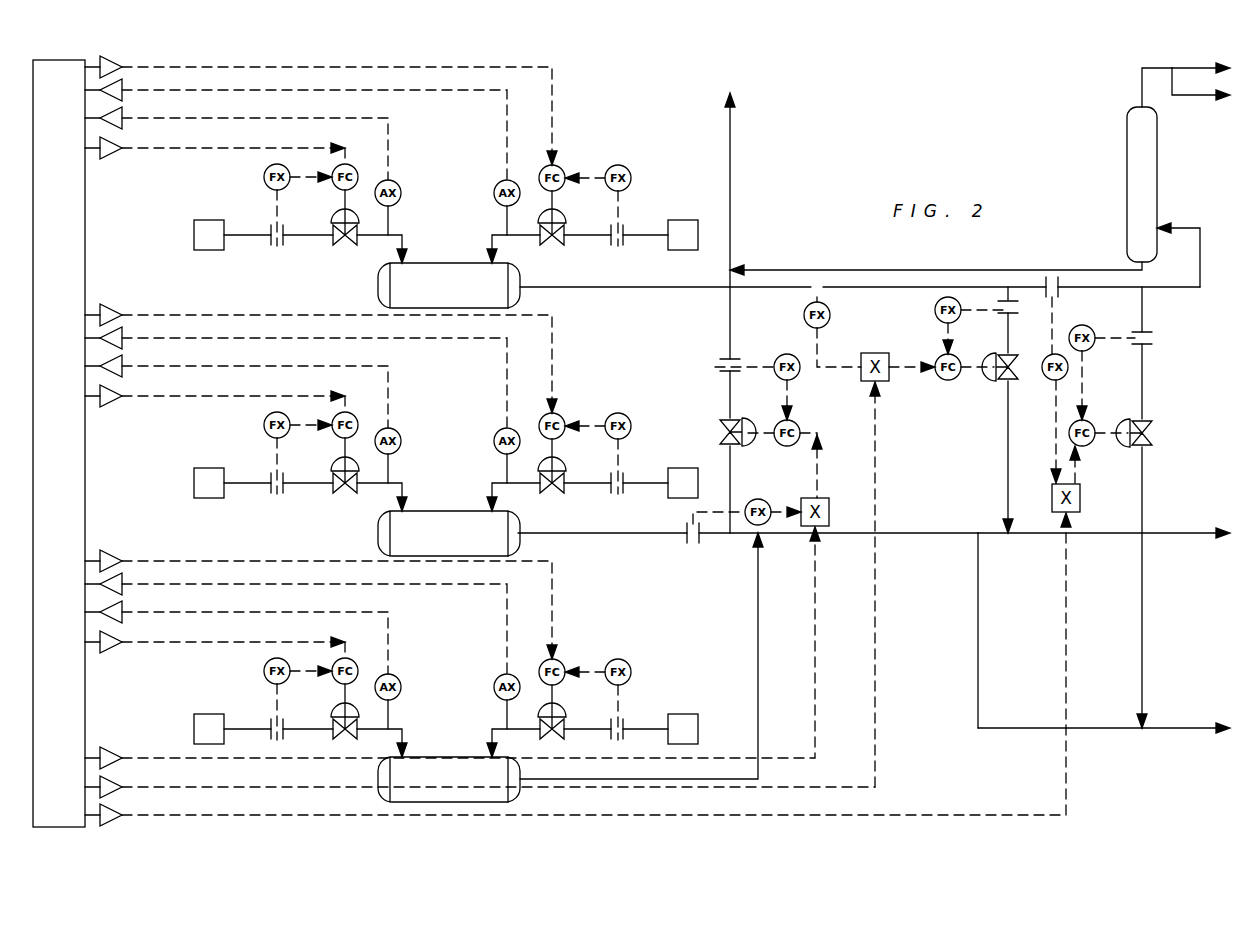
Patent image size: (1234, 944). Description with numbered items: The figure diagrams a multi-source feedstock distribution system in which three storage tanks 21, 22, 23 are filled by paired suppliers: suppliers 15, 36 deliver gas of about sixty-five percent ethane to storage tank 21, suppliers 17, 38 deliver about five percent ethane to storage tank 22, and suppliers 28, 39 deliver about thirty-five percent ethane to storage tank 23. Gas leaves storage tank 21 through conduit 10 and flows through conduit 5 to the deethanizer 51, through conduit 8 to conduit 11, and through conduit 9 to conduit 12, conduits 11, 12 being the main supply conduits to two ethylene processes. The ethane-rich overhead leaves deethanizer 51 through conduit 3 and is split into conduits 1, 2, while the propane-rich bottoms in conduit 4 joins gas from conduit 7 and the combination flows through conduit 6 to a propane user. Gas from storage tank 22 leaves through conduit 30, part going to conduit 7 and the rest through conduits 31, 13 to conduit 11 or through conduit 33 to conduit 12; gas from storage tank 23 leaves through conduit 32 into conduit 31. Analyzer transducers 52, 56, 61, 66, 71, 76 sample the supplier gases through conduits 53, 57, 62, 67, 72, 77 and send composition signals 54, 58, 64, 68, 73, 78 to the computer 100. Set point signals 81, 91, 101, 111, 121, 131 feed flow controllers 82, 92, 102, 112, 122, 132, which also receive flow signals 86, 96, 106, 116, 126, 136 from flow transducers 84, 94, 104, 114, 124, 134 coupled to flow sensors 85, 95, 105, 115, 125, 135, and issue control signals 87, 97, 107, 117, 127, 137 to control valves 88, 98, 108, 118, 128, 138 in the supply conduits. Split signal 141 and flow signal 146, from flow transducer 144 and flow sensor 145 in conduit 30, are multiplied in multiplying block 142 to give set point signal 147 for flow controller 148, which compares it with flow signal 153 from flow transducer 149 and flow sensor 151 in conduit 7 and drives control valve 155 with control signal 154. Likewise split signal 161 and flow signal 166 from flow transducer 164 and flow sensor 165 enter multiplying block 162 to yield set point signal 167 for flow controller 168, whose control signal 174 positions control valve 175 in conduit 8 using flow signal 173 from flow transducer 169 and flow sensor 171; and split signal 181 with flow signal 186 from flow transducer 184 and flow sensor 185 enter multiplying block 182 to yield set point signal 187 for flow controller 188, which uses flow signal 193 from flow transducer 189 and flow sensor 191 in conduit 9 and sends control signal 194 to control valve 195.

The conduit 1 is at (1188, 70).
The conduit 2 is at (1188, 95).
The conduit 3 is at (1140, 70).
The conduit 4 is at (795, 268).
The conduit 5 is at (1200, 225).
The conduit 6 is at (732, 125).
The conduit 7 is at (728, 314).
The conduit 8 is at (1004, 507).
The conduit 9 is at (1144, 384).
The conduit 10 is at (644, 290).
The conduit 11 is at (1178, 530).
The conduit 12 is at (1168, 737).
The conduit 13 is at (986, 546).
The supplier 15 is at (592, 241).
The supplier 17 is at (592, 489).
The storage tank 21 is at (378, 287).
The storage tank 22 is at (427, 533).
The storage tank 23 is at (427, 779).
The supplier 28 is at (592, 735).
The conduit 30 is at (649, 541).
The conduit 31 is at (737, 546).
The conduit 32 is at (758, 658).
The conduit 33 is at (1014, 725).
The supplier 36 is at (300, 241).
The supplier 38 is at (300, 489).
The supplier 39 is at (300, 735).
The deethanizer 51 is at (1125, 127).
The analyzer transducer 52 is at (401, 193).
The conduit 53 is at (390, 213).
The signal 54 is at (388, 157).
The analyzer transducer 56 is at (494, 188).
The conduit 57 is at (505, 213).
The signal 58 is at (507, 135).
The analyzer transducer 61 is at (410, 438).
The conduit 62 is at (417, 468).
The signal 64 is at (265, 391).
The analyzer transducer 66 is at (485, 437).
The conduit 67 is at (479, 468).
The signal 68 is at (296, 377).
The analyzer transducer 71 is at (410, 684).
The conduit 72 is at (417, 714).
The signal 73 is at (265, 637).
The analyzer transducer 76 is at (485, 683).
The conduit 77 is at (479, 714).
The signal 78 is at (296, 623).
The signal 81 is at (141, 150).
The flow controller 82 is at (347, 160).
The flow transducer 84 is at (264, 177).
The flow sensor 85 is at (279, 250).
The signal 86 is at (290, 186).
The signal 87 is at (344, 213).
The control valve 88 is at (345, 248).
The signal 91 is at (554, 90).
The flow controller 92 is at (558, 160).
The flow transducer 94 is at (631, 178).
The flow sensor 95 is at (616, 247).
The signal 96 is at (607, 189).
The signal 97 is at (554, 212).
The control valve 98 is at (552, 248).
The computer 100 is at (86, 256).
The signal 101 is at (215, 414).
The flow controller 102 is at (358, 404).
The flow transducer 104 is at (243, 425).
The flow sensor 105 is at (283, 489).
The signal 106 is at (306, 445).
The signal 107 is at (327, 454).
The control valve 108 is at (345, 491).
The signal 111 is at (349, 358).
The flow controller 112 is at (570, 406).
The flow transducer 114 is at (652, 426).
The flow sensor 115 is at (612, 483).
The signal 116 is at (588, 445).
The signal 117 is at (568, 454).
The control valve 118 is at (553, 491).
The signal 121 is at (215, 660).
The flow controller 122 is at (358, 650).
The flow transducer 124 is at (243, 671).
The flow sensor 125 is at (283, 735).
The signal 126 is at (306, 691).
The signal 127 is at (327, 700).
The control valve 128 is at (345, 737).
The signal 131 is at (349, 604).
The flow controller 132 is at (570, 652).
The flow transducer 134 is at (652, 672).
The flow sensor 135 is at (612, 729).
The signal 136 is at (588, 691).
The signal 137 is at (568, 700).
The control valve 138 is at (553, 737).
The signal 141 is at (784, 756).
The multiplying block 142 is at (829, 510).
The flow transducer 144 is at (760, 497).
The flow sensor 145 is at (692, 545).
The signal 146 is at (790, 506).
The signal 147 is at (818, 482).
The flow controller 148 is at (797, 429).
The flow transducer 149 is at (800, 370).
The flow sensor 151 is at (722, 365).
The signal 153 is at (784, 378).
The signal 154 is at (764, 436).
The control valve 155 is at (728, 414).
The signal 161 is at (843, 786).
The multiplying block 162 is at (877, 353).
The flow transducer 164 is at (783, 355).
The flow sensor 165 is at (804, 314).
The signal 166 is at (845, 367).
The signal 167 is at (877, 394).
The flow controller 168 is at (937, 358).
The flow transducer 169 is at (934, 300).
The flow sensor 171 is at (1010, 312).
The signal 173 is at (950, 336).
The signal 174 is at (975, 367).
The control valve 175 is at (1004, 381).
The signal 181 is at (925, 814).
The multiplying block 182 is at (1080, 497).
The flow transducer 184 is at (1046, 381).
The flow sensor 185 is at (1062, 298).
The signal 186 is at (1055, 449).
The signal 187 is at (1080, 472).
The flow controller 188 is at (1090, 445).
The flow transducer 189 is at (1090, 343).
The flow sensor 191 is at (1148, 336).
The signal 193 is at (1084, 396).
The signal 194 is at (1115, 432).
The control valve 195 is at (1156, 431).